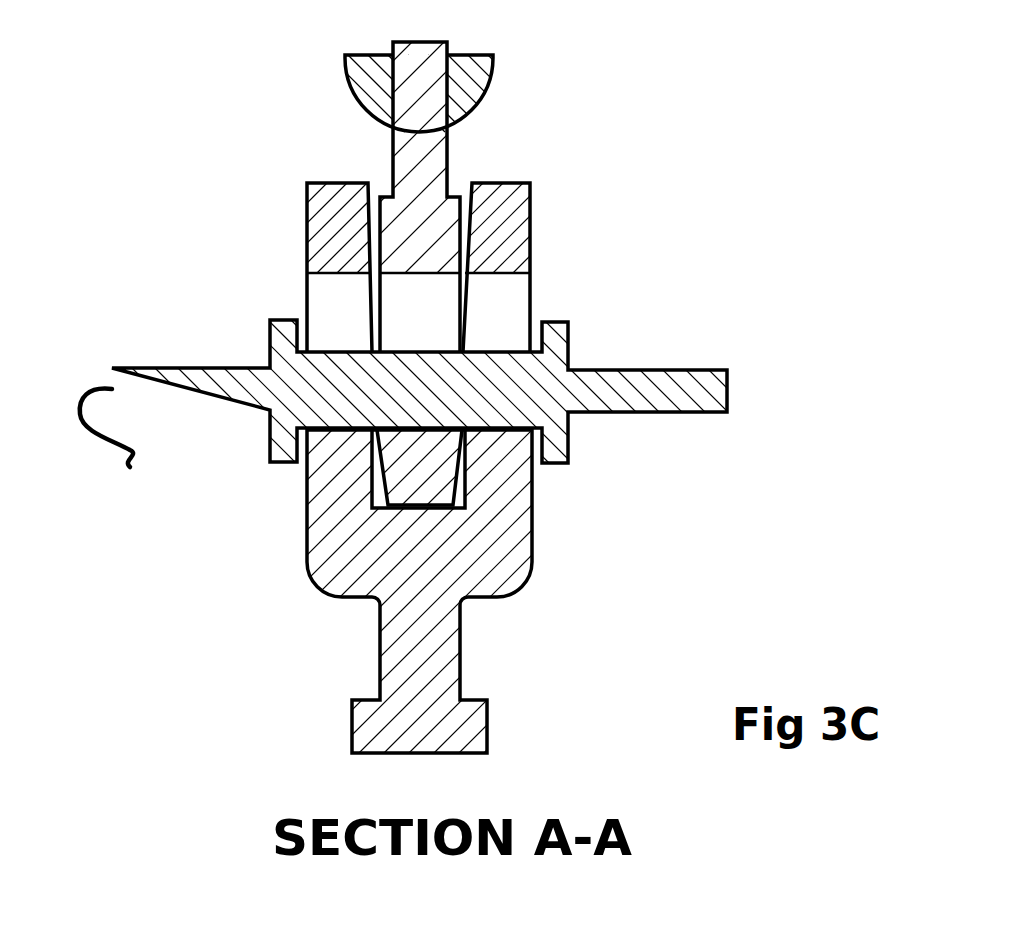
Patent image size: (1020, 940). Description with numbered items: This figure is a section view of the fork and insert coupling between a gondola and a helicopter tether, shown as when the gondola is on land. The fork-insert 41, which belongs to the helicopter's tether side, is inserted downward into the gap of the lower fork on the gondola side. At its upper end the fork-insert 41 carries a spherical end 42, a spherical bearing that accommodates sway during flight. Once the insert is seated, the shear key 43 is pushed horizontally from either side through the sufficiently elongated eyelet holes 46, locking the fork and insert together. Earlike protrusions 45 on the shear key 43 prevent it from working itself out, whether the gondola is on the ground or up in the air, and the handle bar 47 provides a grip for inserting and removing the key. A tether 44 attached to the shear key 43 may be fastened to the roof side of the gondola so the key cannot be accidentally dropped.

The fork-insert of coupling 41 is at (450, 172).
The spherical end of fork-insert 42 is at (345, 85).
The shear key 43 is at (330, 350).
The shear key's tether 44 is at (125, 468).
The earlike protrusion 45 is at (570, 322).
The elongated eyelet holes 46 is at (462, 313).
The handle bar of shear key 47 is at (652, 413).